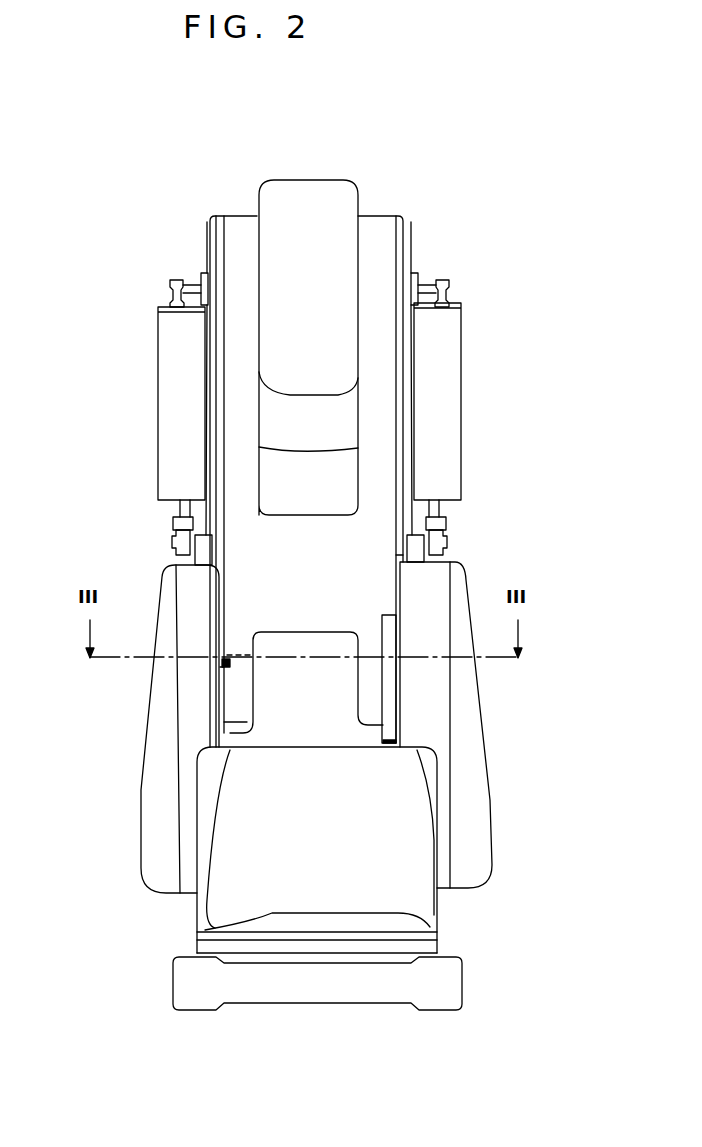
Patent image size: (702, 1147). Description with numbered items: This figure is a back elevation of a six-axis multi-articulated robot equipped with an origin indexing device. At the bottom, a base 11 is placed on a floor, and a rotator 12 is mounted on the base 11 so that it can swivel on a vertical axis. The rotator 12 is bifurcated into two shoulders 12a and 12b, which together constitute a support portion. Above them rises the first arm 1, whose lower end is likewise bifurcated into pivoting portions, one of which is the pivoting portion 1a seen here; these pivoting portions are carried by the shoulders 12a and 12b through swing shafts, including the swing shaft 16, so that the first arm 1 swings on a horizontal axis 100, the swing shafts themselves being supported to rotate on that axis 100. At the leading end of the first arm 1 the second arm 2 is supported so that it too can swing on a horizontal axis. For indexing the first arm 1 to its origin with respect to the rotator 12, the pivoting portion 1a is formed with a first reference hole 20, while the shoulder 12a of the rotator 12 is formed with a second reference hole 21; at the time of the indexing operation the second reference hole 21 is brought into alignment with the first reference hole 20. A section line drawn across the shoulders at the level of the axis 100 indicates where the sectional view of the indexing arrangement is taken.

The first arm 1 is at (240, 228).
The second arm 2 is at (345, 206).
The shoulder 12a is at (180, 600).
The shoulder 12b is at (435, 593).
The rotator 12 is at (400, 857).
The base 11 is at (443, 985).
The swing shaft 16 is at (372, 711).
The first reference hole 20 is at (240, 659).
The pivoting portion 1a is at (242, 722).
The horizontal axis 100 is at (225, 663).
The second reference hole 21 is at (222, 668).